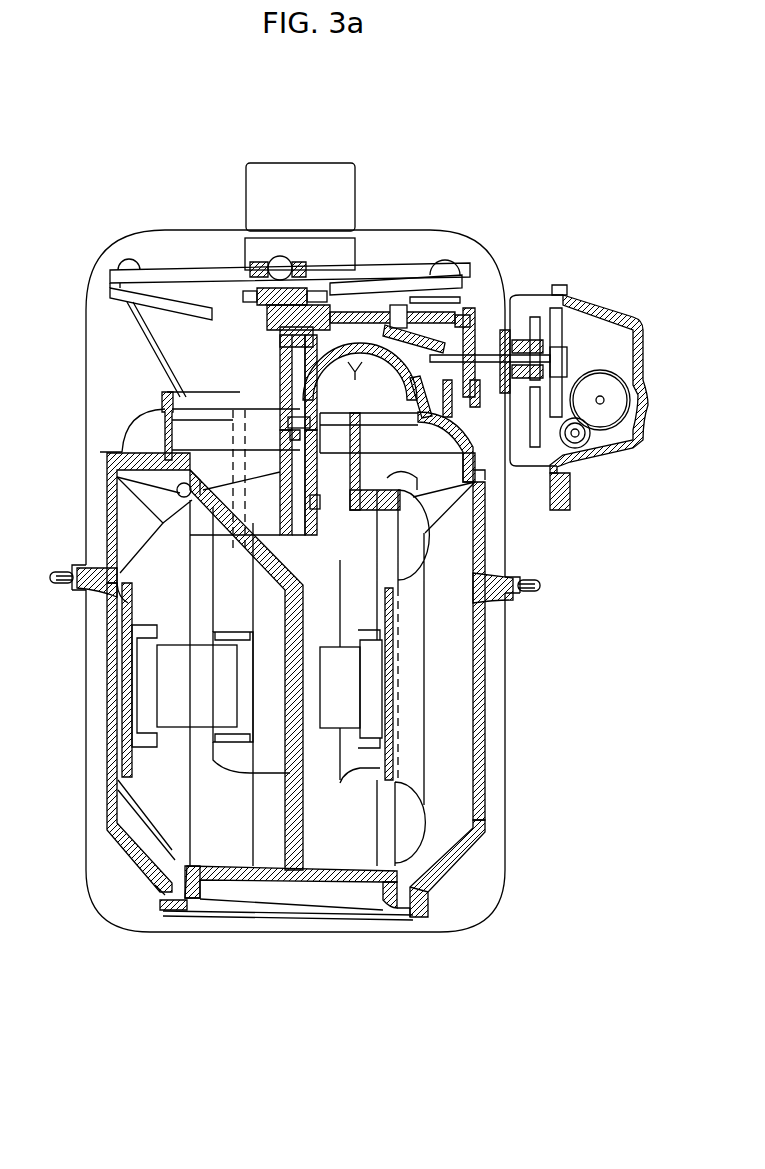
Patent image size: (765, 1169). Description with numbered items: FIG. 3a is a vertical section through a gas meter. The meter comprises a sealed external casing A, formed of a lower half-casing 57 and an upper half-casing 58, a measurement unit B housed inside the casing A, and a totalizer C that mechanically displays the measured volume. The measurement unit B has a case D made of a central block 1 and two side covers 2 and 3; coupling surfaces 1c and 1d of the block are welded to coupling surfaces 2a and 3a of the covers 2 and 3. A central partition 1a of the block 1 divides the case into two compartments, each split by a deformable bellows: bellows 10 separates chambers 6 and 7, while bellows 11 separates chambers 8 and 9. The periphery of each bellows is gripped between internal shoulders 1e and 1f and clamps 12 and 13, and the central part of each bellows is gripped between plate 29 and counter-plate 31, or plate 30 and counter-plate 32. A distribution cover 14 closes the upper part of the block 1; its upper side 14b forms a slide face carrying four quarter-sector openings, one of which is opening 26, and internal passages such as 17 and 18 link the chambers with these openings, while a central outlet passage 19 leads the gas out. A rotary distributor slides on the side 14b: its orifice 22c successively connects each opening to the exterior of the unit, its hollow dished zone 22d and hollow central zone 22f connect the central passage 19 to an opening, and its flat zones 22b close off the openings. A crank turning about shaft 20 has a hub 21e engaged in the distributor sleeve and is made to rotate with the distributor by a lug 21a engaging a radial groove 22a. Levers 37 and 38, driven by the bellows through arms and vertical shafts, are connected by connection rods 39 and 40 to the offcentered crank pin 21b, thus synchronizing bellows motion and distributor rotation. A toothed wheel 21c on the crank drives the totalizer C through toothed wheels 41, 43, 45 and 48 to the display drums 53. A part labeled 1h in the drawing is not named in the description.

The central block 1 is at (292, 800).
The central partition 1a is at (282, 640).
The coupling surface 1c is at (110, 470).
The coupling surface 1d is at (482, 478).
The internal shoulder 1e is at (180, 870).
The internal shoulder 1f is at (392, 870).
The frame boss 1h is at (320, 502).
The side cover 2 is at (103, 785).
The coupling surface 2a is at (170, 913).
The side cover 3 is at (490, 822).
The coupling surface 3a is at (418, 918).
The chamber 6 is at (140, 533).
The chamber 7 is at (179, 545).
The chamber 8 is at (456, 543).
The chamber 9 is at (393, 546).
The bellows 10 is at (140, 840).
The bellows 11 is at (427, 815).
The clamp 12 is at (158, 890).
The clamp 13 is at (435, 890).
The distribution cover 14 is at (137, 420).
The upper side of distribution cover 14b is at (396, 443).
The internal passage 17 is at (452, 473).
The internal passage 18 is at (224, 472).
The central outlet passage 19 is at (347, 481).
The shaft 20 is at (306, 437).
The lug 21a is at (275, 331).
The crank pin 21b is at (281, 257).
The toothed wheel 21c is at (258, 297).
The hub 21e is at (318, 395).
The radial groove 22a is at (278, 345).
The flat zones 22b is at (448, 410).
The orifice 22c is at (176, 388).
The dished zone 22d is at (382, 389).
The hollow central zone 22f is at (245, 431).
The opening 26 is at (355, 250).
The plate 29 is at (132, 616).
The plate 30 is at (388, 606).
The counter-plate 31 is at (128, 612).
The counter-plate 32 is at (400, 610).
The first lever 37 is at (108, 296).
The first lever 38 is at (476, 312).
The connection rod 39 is at (178, 272).
The connection rod 40 is at (440, 273).
The toothed wheel 41 is at (434, 303).
The toothed wheel 43 is at (492, 330).
The toothed wheel 45 is at (500, 345).
The toothed wheel 48 is at (562, 342).
The measurement display drums 53 is at (643, 386).
The lower half-casing 57 is at (86, 730).
The upper half-casing 58 is at (86, 412).
The external casing A is at (517, 733).
The measurement unit B is at (490, 700).
The totalizer C is at (617, 340).
The case D is at (485, 810).